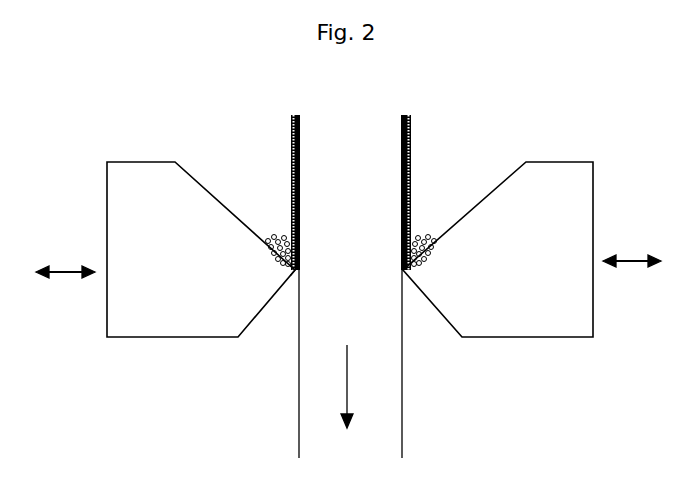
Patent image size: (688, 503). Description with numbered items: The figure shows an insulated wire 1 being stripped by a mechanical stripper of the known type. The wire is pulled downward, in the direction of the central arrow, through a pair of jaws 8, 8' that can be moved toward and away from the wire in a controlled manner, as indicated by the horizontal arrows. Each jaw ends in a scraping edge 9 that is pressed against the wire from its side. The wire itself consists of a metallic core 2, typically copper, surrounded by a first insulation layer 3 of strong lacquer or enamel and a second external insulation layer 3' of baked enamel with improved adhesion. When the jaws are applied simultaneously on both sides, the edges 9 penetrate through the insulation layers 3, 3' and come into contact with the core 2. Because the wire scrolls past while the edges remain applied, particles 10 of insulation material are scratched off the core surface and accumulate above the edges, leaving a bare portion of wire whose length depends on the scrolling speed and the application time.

The insulated wire 1 is at (329, 268).
The metallic core 2 is at (339, 186).
The first insulation layer 3 is at (433, 188).
The second external insulation layer 3' is at (252, 192).
The jaws 8 is at (165, 249).
The jaw 8' is at (532, 249).
The scraping edges 9 is at (296, 273).
The particles 10 is at (427, 240).